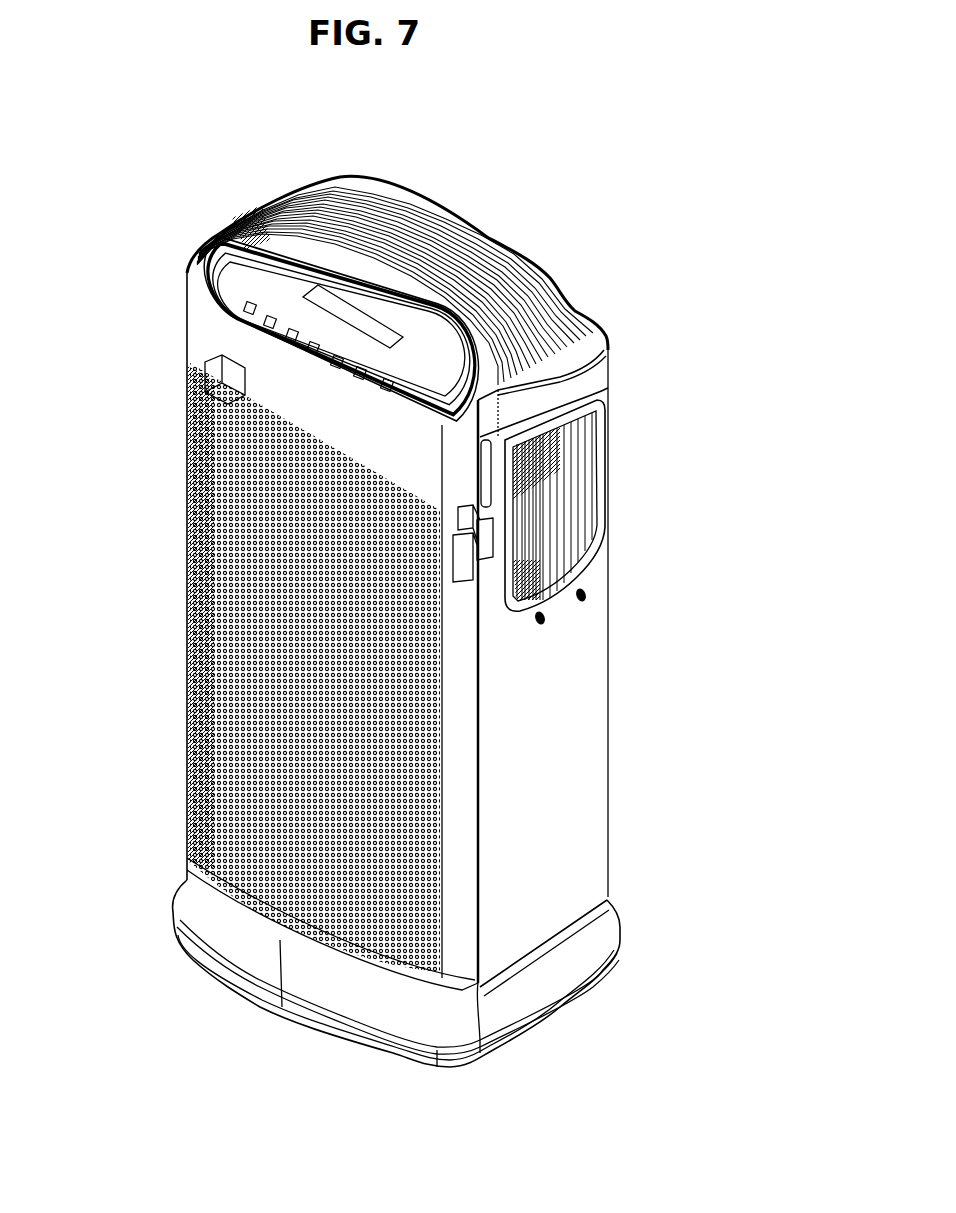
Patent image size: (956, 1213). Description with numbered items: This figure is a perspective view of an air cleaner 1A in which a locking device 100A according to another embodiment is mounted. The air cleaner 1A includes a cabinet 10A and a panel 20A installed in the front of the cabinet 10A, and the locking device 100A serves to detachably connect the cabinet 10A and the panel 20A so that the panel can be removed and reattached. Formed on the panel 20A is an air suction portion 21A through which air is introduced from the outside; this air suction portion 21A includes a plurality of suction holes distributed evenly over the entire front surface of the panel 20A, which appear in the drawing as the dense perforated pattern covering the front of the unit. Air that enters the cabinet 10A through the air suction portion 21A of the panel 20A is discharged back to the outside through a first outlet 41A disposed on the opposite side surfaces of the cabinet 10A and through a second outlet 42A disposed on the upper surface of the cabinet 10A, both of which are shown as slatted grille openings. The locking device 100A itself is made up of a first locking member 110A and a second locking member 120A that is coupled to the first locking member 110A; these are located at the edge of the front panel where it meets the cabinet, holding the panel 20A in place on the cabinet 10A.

The air cleaner 1A is at (530, 129).
The cabinet 10A is at (583, 688).
The panel 20A is at (150, 482).
The air suction portion 21A is at (183, 537).
The first outlet 41A is at (573, 452).
The second outlet 42A is at (435, 225).
The locking device 100A is at (185, 366).
The first locking member 110A is at (450, 560).
The second locking member 120A is at (486, 515).